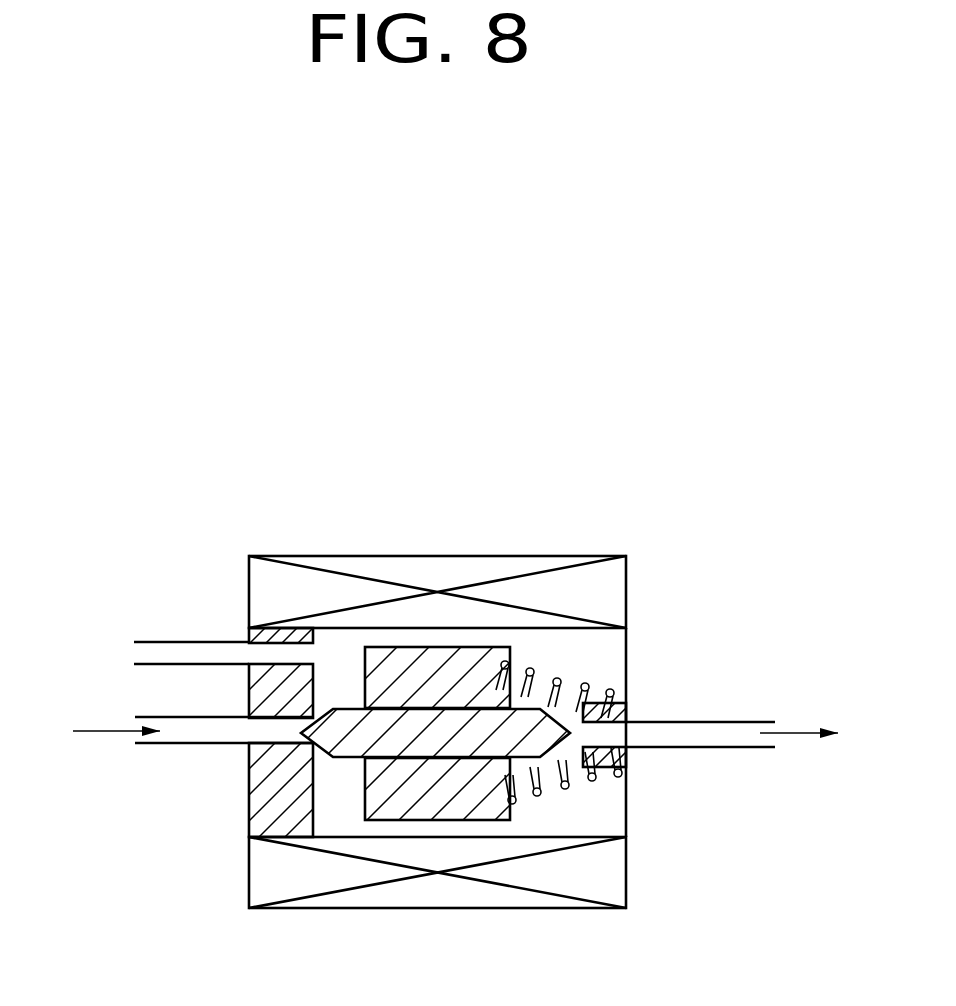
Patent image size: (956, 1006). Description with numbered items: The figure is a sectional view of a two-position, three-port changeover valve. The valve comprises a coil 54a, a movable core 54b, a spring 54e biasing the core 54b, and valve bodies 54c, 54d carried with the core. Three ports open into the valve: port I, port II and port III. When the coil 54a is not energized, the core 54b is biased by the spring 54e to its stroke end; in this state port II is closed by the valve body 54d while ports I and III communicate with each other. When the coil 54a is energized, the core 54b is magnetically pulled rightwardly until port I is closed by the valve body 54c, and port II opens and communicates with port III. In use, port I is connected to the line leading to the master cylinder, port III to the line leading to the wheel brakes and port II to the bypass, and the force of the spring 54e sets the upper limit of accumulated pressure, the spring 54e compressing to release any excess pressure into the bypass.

The coil 54a is at (600, 594).
The movable core 54b is at (452, 805).
The valve body 54c is at (551, 740).
The valve body 54d is at (343, 733).
The spring 54e is at (627, 783).
The port I is at (613, 735).
The port II is at (275, 727).
The port III is at (248, 652).